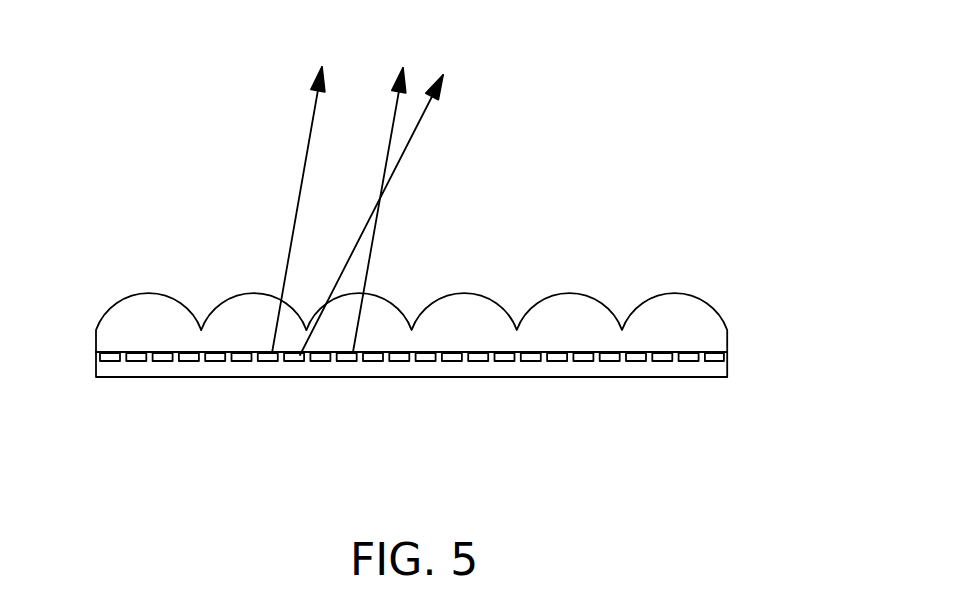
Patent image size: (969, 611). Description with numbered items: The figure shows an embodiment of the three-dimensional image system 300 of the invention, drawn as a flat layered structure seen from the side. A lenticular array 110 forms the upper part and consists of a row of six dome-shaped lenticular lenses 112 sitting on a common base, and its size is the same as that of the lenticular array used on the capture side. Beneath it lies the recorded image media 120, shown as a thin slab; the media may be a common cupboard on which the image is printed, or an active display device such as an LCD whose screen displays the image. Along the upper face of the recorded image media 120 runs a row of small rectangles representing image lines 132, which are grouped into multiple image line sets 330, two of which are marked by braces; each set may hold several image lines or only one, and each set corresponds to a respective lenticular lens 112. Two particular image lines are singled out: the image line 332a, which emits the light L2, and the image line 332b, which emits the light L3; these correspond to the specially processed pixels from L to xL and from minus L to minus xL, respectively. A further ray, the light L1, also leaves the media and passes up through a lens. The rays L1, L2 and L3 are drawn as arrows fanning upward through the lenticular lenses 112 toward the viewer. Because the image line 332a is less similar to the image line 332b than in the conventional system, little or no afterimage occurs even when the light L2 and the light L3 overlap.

The 3D image system 300 is at (732, 334).
The lenticular array 110 is at (94, 331).
The lenticular lens 112 is at (256, 294).
The recorded image media 120 is at (727, 367).
The image line 132 is at (280, 352).
The image line set 330 is at (303, 361).
The image line 332a is at (300, 361).
The image line 332b is at (328, 361).
The light L1 is at (298, 199).
The light L2 is at (382, 201).
The light L3 is at (379, 196).